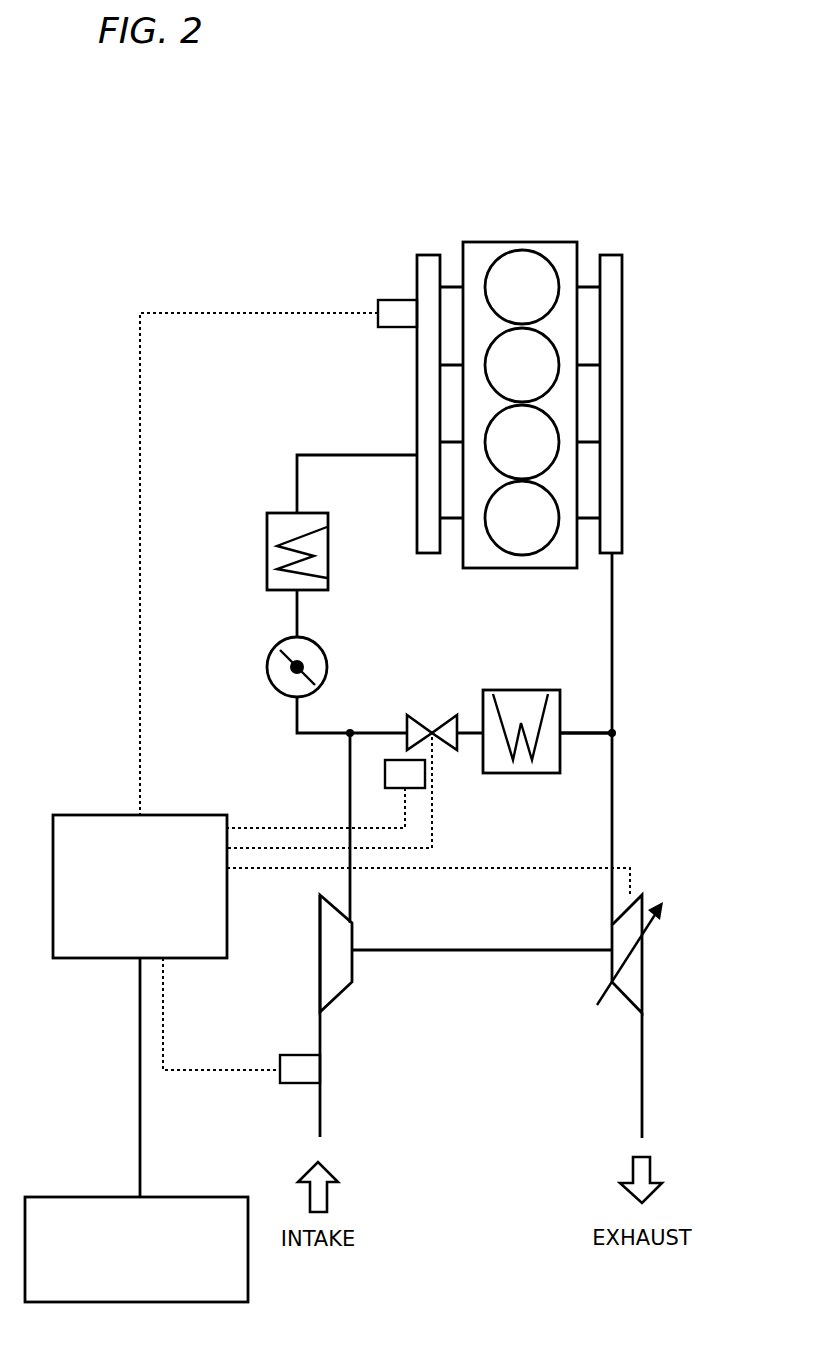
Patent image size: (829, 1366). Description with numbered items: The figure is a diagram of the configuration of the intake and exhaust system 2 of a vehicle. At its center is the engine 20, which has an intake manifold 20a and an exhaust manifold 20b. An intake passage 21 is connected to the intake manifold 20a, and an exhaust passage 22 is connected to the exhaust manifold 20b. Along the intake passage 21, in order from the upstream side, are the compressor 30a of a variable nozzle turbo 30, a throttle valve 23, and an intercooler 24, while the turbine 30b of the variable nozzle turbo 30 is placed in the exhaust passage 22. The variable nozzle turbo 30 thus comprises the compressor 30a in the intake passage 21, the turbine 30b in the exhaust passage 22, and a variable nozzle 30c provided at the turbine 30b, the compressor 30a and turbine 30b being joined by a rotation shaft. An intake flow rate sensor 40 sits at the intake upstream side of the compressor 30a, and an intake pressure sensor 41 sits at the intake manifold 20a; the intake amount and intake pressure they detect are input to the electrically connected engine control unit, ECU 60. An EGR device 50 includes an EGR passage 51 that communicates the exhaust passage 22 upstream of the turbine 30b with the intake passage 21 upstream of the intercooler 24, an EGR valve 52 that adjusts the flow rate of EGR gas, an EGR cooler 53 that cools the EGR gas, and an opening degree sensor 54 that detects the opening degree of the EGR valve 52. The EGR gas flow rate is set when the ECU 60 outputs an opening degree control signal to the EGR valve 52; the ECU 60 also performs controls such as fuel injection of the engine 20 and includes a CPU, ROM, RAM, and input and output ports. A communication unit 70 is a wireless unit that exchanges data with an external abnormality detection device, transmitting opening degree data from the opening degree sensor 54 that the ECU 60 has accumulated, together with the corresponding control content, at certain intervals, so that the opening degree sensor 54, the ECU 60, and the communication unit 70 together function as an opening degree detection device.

The intake and exhaust system 2 is at (355, 112).
The engine 20 is at (522, 242).
The intake manifold 20a is at (417, 398).
The exhaust manifold 20b is at (622, 400).
The intake passage 21 is at (297, 465).
The exhaust passage 22 is at (613, 630).
The throttle valve 23 is at (328, 660).
The intercooler 24 is at (330, 542).
The variable nozzle turbo 30 is at (475, 985).
The compressor 30a is at (318, 978).
The turbine 30b is at (645, 965).
The variable nozzle 30c is at (645, 1000).
The intake flow rate sensor 40 is at (300, 1083).
The intake pressure sensor 41 is at (397, 300).
The EGR device 50 is at (466, 656).
The EGR passage 51 is at (576, 733).
The EGR valve 52 is at (448, 713).
The EGR cooler 53 is at (520, 690).
The opening degree sensor 54 is at (385, 770).
The engine control unit (ECU) 60 is at (85, 815).
The communication unit 70 is at (97, 1197).